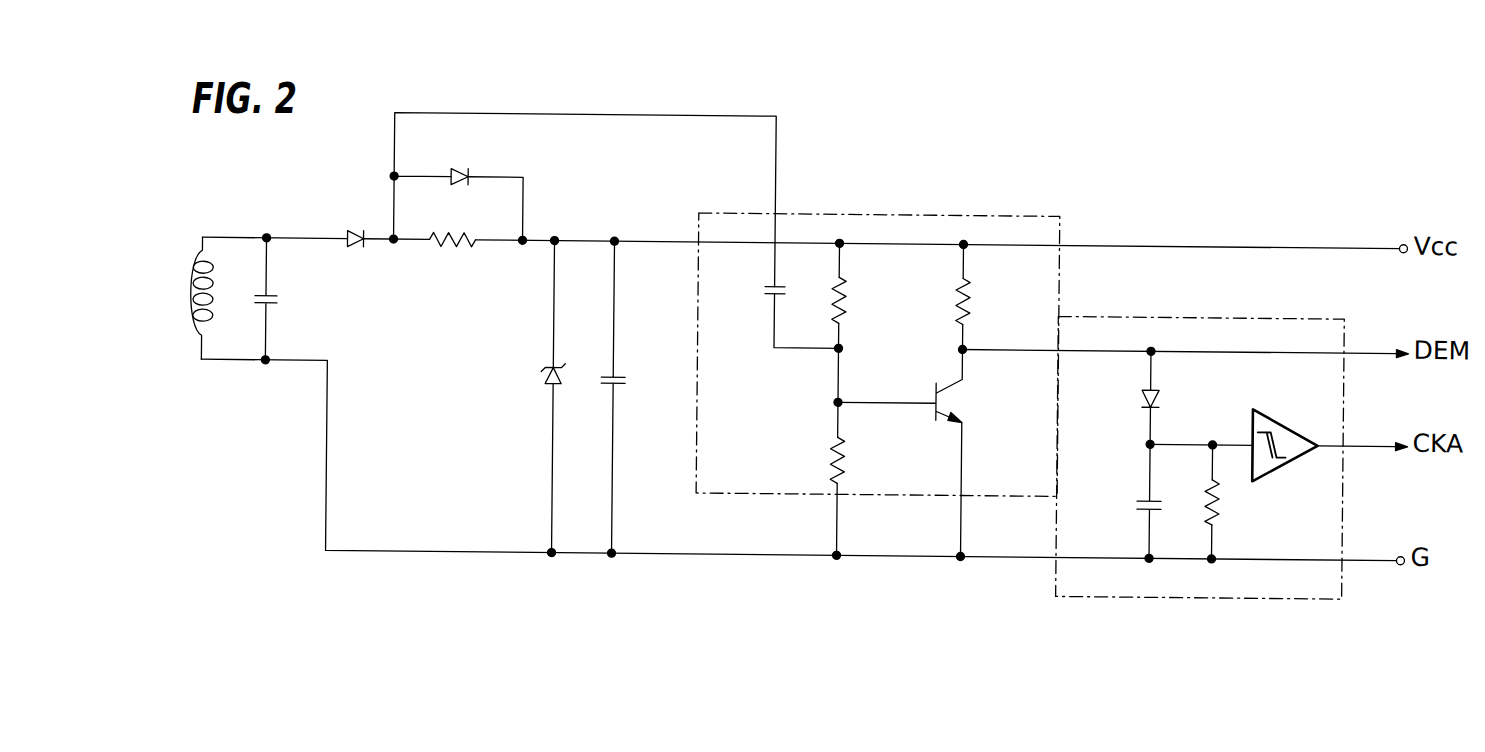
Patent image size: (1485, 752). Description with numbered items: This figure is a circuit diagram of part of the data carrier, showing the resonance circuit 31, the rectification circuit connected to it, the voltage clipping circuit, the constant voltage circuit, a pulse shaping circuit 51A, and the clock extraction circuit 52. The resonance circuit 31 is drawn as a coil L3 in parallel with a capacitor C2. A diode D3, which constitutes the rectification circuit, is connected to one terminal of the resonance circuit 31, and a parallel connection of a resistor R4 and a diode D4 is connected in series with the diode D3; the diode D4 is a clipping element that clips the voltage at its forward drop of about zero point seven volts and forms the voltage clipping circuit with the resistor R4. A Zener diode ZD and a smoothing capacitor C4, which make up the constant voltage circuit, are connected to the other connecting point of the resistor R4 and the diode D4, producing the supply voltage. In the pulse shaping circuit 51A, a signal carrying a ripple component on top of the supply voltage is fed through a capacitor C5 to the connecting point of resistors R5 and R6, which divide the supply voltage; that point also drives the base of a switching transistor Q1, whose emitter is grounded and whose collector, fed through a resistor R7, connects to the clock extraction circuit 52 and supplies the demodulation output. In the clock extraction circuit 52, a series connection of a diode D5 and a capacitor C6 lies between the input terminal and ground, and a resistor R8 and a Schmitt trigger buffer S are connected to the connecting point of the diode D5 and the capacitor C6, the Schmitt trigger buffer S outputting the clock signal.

The coil (inductor) L3 is at (190, 336).
The resonance circuit 31 is at (240, 344).
The capacitor C2 is at (243, 297).
The diode D3 is at (358, 222).
The diode D4 is at (435, 161).
The resistor R4 is at (457, 255).
The Zener diode ZD is at (534, 371).
The smoothing capacitor C4 is at (629, 397).
The pulse shaping circuit 51A is at (996, 214).
The capacitor C5 is at (755, 293).
The resistor R5 is at (857, 295).
The resistor R6 is at (819, 453).
The resistor R7 is at (981, 296).
The switching transistor Q1 is at (960, 405).
The clock extraction circuit 52 is at (1296, 313).
The diode D5 is at (1132, 398).
The capacitor C6 is at (1131, 503).
The resistor R8 is at (1229, 502).
The Schmitt trigger buffer S is at (1290, 430).